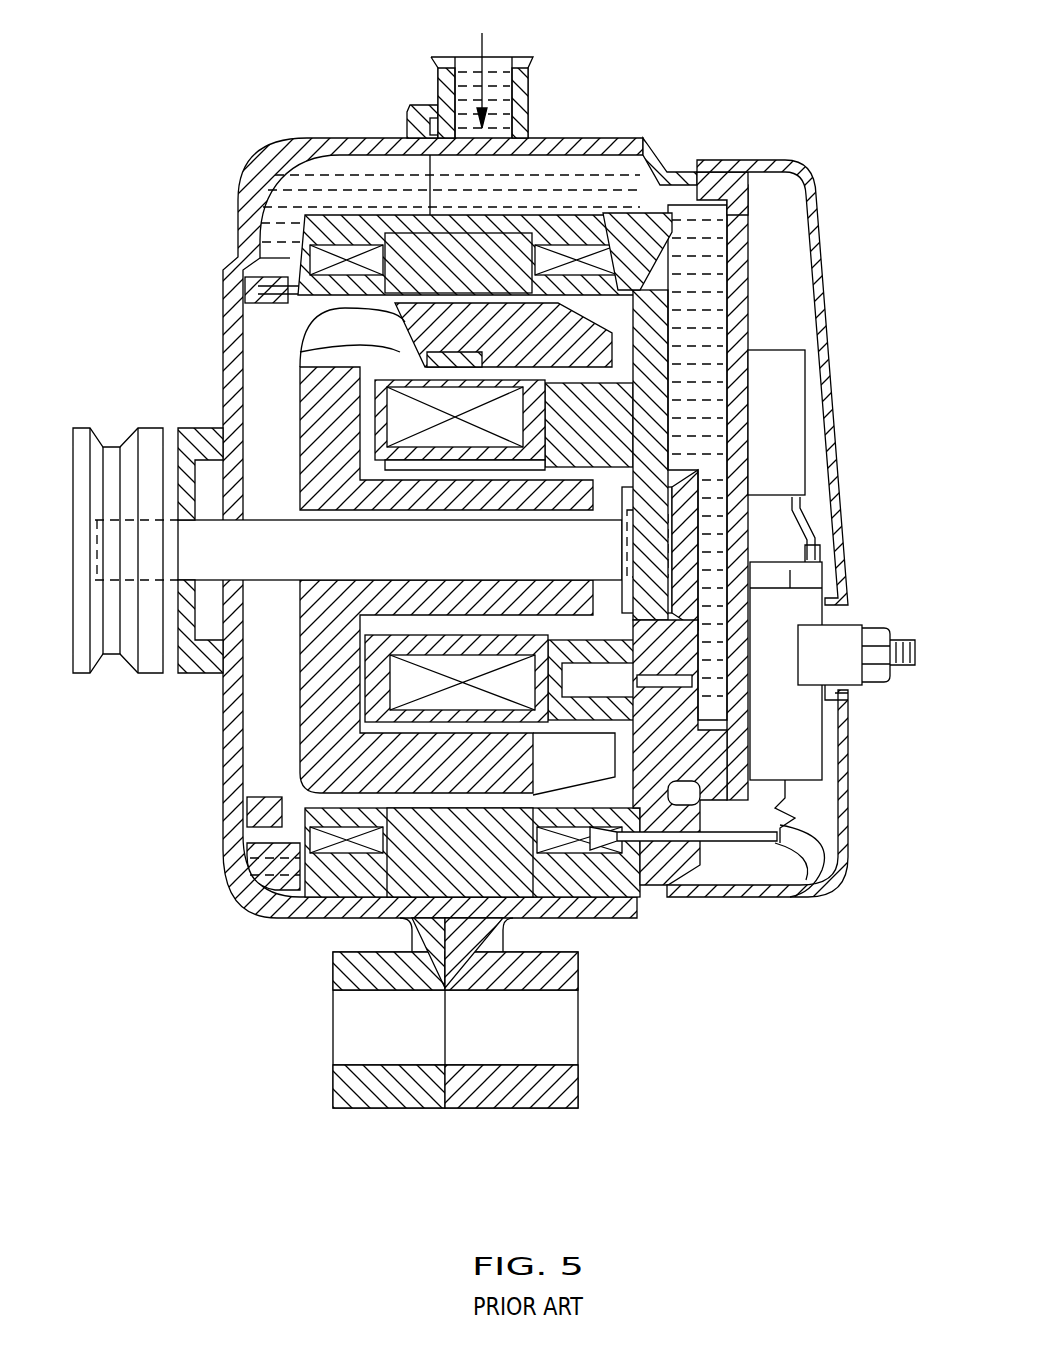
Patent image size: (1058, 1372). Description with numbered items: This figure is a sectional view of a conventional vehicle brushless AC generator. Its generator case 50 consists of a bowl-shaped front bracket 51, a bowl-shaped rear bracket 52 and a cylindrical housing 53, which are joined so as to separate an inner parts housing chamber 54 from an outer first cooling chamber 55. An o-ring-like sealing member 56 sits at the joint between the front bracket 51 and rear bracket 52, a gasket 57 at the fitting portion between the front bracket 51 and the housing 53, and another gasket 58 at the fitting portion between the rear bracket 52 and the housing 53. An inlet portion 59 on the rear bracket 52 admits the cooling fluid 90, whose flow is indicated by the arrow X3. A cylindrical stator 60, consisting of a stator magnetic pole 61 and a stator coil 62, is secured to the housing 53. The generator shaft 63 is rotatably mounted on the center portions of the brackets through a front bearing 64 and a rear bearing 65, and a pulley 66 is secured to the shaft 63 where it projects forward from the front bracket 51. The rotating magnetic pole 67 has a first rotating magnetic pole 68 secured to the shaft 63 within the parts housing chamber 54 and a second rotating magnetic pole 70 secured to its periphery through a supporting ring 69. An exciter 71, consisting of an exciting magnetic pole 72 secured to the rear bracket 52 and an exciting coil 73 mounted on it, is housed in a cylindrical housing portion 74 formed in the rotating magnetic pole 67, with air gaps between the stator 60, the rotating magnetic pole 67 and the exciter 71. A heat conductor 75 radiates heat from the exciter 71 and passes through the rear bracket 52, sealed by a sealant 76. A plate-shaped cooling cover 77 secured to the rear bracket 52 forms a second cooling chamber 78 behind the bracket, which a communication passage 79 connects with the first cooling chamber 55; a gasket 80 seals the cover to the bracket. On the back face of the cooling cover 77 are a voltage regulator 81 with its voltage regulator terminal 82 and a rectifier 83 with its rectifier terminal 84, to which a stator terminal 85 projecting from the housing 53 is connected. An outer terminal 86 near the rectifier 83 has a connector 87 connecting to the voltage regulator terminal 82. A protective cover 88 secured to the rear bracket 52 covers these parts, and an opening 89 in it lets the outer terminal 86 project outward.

The generator case 50 is at (455, 1061).
The front bracket 51 is at (395, 1095).
The rear bracket 52 is at (502, 1095).
The housing 53 is at (262, 890).
The parts housing chamber 54 is at (255, 770).
The first cooling chamber 55 is at (312, 172).
The sealing member 56 is at (413, 132).
The gasket 57 is at (250, 285).
The gasket 58 is at (717, 320).
The inlet portion 59 is at (440, 82).
The stator 60 is at (473, 478).
The stator magnetic pole 61 is at (522, 240).
The stator coil 62 is at (585, 247).
The generator shaft 63 is at (286, 562).
The front bearing 64 is at (220, 632).
The rear bearing 65 is at (673, 497).
The pulley 66 is at (112, 648).
The rotating magnetic pole 67 is at (384, 510).
The first rotating magnetic pole 68 is at (315, 410).
The supporting ring 69 is at (430, 362).
The second rotating magnetic pole 70 is at (325, 320).
The exciter 71 is at (501, 586).
The exciting magnetic pole 72 is at (594, 715).
The exciting coil 73 is at (495, 707).
The cylindrical housing portion 74 is at (370, 733).
The heat conductor 75 is at (680, 684).
The sealant 76 is at (650, 688).
The cooling cover 77 is at (760, 190).
The second cooling chamber 78 is at (713, 322).
The communication passage 79 is at (677, 230).
The gasket 80 is at (730, 172).
The voltage regulator 81 is at (795, 368).
The voltage regulator terminal 82 is at (806, 505).
The rectifier 83 is at (787, 740).
The rectifier terminal 84 is at (800, 823).
The stator terminal 85 is at (818, 888).
The outer terminal 86 is at (890, 646).
The connector 87 is at (814, 545).
The protective cover 88 is at (847, 574).
The opening 89 is at (846, 694).
The cooling fluid 90 is at (468, 65).
The coolant flow direction X3 is at (490, 45).